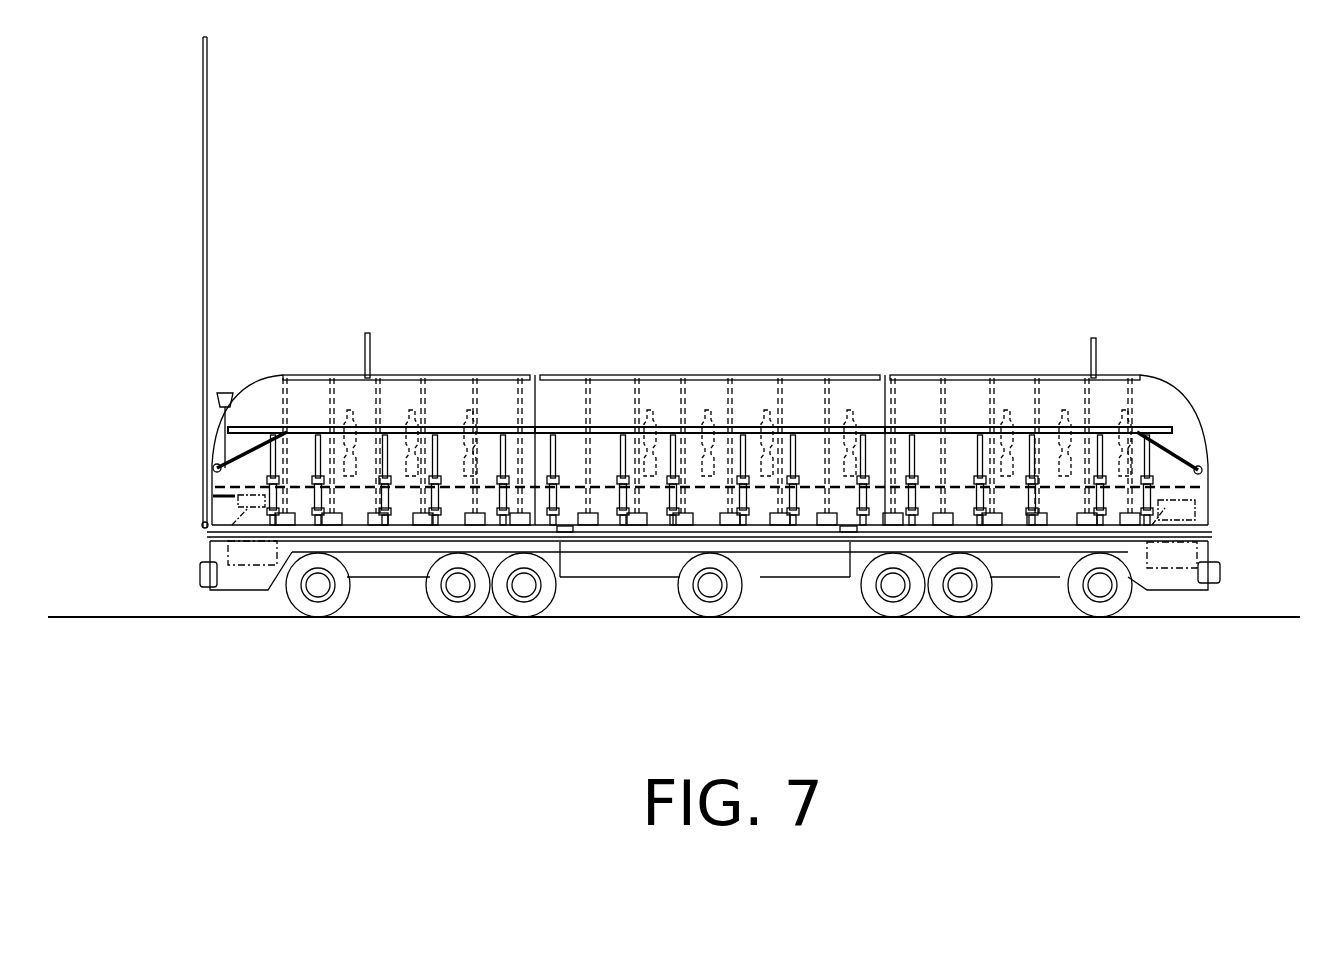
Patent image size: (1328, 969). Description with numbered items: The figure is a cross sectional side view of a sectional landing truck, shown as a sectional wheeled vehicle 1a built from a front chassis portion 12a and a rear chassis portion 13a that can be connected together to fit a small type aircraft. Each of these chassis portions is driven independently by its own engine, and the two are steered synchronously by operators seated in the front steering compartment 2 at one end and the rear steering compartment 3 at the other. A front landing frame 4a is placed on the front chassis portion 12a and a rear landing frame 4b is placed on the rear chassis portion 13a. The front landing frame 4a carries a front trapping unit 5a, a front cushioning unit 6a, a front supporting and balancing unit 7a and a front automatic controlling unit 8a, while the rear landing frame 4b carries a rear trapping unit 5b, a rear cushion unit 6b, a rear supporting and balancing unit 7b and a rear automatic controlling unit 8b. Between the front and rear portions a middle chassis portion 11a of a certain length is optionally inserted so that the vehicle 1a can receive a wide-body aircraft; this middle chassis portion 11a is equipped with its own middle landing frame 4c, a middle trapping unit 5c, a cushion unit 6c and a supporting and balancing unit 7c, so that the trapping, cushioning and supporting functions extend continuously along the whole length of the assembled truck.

The sectional wheeled vehicle 1a is at (383, 585).
The front steering compartment 2 is at (250, 570).
The rear steering compartment 3 is at (1173, 570).
The front landing frame 4a is at (205, 502).
The rear landing frame 4b is at (1187, 448).
The middle landing frame 4c is at (612, 503).
The front trapping unit 5a is at (331, 360).
The rear trapping unit 5b is at (1035, 365).
The middle trapping unit 5c is at (782, 374).
The front cushioning unit 6a is at (495, 425).
The rear cushion unit 6b is at (963, 425).
The cushion unit 6c is at (665, 375).
The front supporting and balancing unit 7a is at (300, 362).
The rear supporting and balancing unit 7b is at (1160, 362).
The supporting and balancing unit 7c is at (727, 360).
The front automatic controlling unit 8a is at (373, 330).
The rear automatic controlling unit 8b is at (1098, 355).
The middle chassis portion 11a is at (787, 573).
The front chassis portion 12a is at (215, 548).
The rear chassis portion 13a is at (1208, 547).